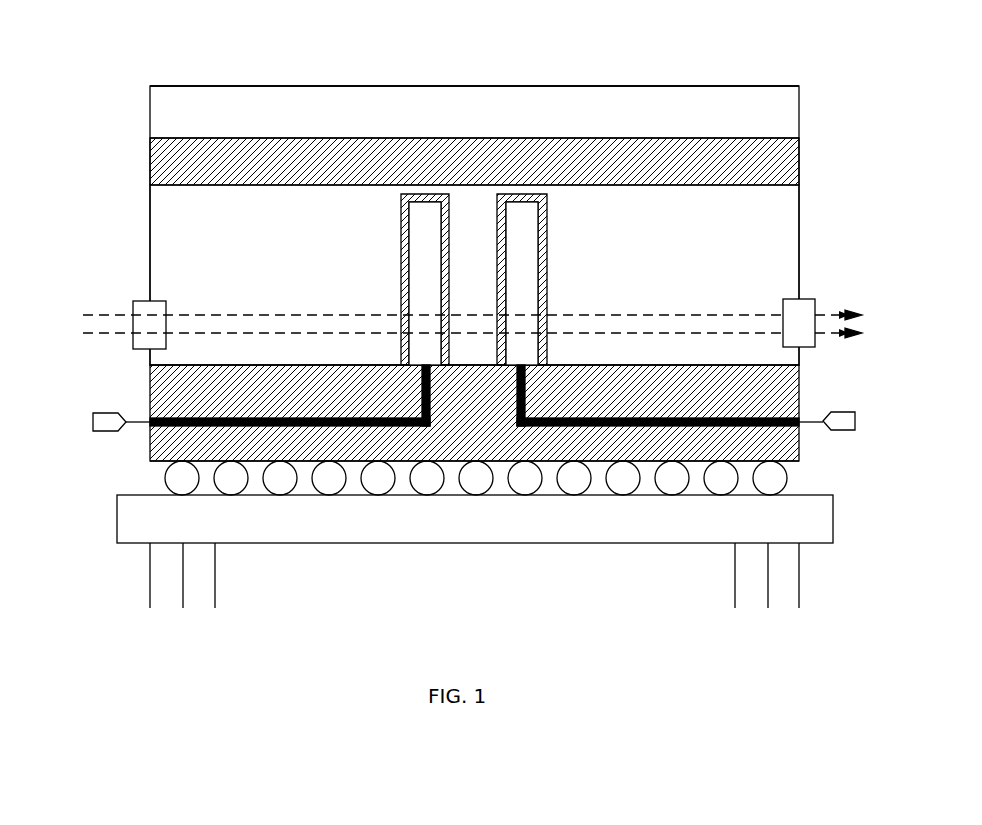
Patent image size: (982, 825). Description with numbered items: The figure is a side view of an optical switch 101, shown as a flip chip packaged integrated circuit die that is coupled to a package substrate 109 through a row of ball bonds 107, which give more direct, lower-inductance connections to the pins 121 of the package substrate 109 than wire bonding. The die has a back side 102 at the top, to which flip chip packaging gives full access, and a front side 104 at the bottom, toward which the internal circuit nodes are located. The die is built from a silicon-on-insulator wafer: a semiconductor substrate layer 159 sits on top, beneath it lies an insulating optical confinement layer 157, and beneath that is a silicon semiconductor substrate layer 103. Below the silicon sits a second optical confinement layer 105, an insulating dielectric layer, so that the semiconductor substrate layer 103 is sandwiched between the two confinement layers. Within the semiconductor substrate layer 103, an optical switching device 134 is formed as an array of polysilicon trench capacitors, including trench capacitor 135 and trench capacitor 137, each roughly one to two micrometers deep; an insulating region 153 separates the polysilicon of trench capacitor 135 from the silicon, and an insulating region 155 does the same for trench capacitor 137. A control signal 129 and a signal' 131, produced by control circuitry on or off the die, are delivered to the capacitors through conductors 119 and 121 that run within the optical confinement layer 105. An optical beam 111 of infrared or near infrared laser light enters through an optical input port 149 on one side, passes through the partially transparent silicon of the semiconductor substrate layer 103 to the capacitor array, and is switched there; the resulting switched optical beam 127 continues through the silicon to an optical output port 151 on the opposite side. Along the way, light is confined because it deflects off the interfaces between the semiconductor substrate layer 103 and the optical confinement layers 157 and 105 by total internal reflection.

The optical switch 101 is at (836, 56).
The back side 102 is at (734, 86).
The semiconductor substrate layer 103 is at (790, 215).
The front side 104 is at (797, 463).
The optical confinement layer 105 is at (799, 403).
The ball bonds 107 is at (522, 487).
The package substrate 109 is at (833, 520).
The optical beam 111 is at (80, 307).
The conductor 119 is at (418, 382).
The conductor / pins 121 is at (527, 378).
The switched optical beam 127 is at (867, 302).
The signal 129 is at (60, 410).
The signal' 131 is at (878, 410).
The optical switching device 134 is at (522, 279).
The trench capacitor 135 is at (426, 300).
The trench capacitor 137 is at (520, 300).
The optical input port 149 is at (140, 300).
The optical output port 151 is at (806, 298).
The insulating region 153 is at (448, 256).
The insulating region 155 is at (547, 256).
The optical confinement layer 157 is at (790, 162).
The semiconductor substrate layer 159 is at (790, 115).